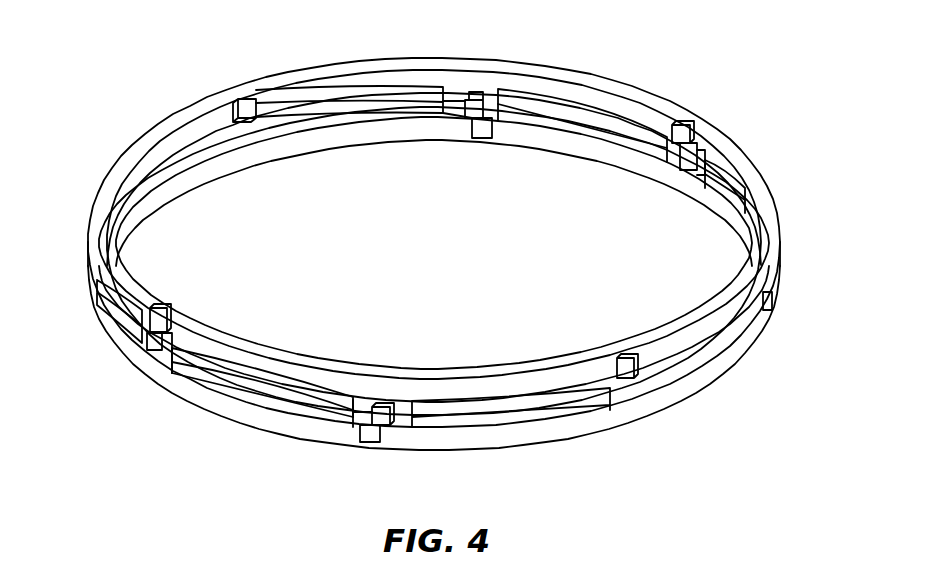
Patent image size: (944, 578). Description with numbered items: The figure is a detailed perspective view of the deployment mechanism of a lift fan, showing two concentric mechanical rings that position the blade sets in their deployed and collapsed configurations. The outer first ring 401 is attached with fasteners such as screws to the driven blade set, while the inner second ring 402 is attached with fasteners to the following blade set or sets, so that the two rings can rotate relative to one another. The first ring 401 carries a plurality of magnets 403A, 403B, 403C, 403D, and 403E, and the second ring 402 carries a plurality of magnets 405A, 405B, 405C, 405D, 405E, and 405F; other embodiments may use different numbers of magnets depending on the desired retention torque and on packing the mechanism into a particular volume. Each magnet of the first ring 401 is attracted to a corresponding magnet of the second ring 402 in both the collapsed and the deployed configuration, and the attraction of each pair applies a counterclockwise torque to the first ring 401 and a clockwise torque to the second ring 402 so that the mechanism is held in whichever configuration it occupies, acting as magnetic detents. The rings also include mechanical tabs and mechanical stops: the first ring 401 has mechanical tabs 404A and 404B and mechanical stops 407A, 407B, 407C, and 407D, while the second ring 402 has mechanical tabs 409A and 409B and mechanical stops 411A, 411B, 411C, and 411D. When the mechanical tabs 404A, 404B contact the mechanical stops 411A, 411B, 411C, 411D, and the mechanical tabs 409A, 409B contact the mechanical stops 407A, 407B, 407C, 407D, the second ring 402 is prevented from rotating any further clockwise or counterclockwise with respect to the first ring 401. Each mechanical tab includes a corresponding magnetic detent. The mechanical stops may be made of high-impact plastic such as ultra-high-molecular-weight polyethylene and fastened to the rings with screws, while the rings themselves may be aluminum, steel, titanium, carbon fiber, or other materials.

The first ring 401 is at (716, 396).
The second ring 402 is at (492, 378).
The magnet 403A is at (148, 350).
The magnet 403B is at (371, 442).
The magnet 403C is at (770, 308).
The magnet 403D is at (686, 168).
The magnet 403E is at (482, 138).
The mechanical tab 404A is at (166, 360).
The mechanical tab 404B is at (712, 154).
The magnet 405A is at (160, 312).
The magnet 405B is at (384, 405).
The magnet 405C is at (626, 358).
The magnet 405D is at (680, 125).
The magnet 405E is at (479, 100).
The magnet 405F is at (246, 104).
The mechanical stop 407A is at (216, 384).
The mechanical stop 407B is at (748, 182).
The mechanical stop 407C is at (514, 98).
The mechanical stop 407D is at (98, 316).
The mechanical tab 409A is at (352, 426).
The mechanical tab 409B is at (455, 110).
The mechanical stop 411A is at (270, 400).
The mechanical stop 411B is at (566, 412).
The mechanical stop 411C is at (610, 114).
The mechanical stop 411D is at (316, 96).